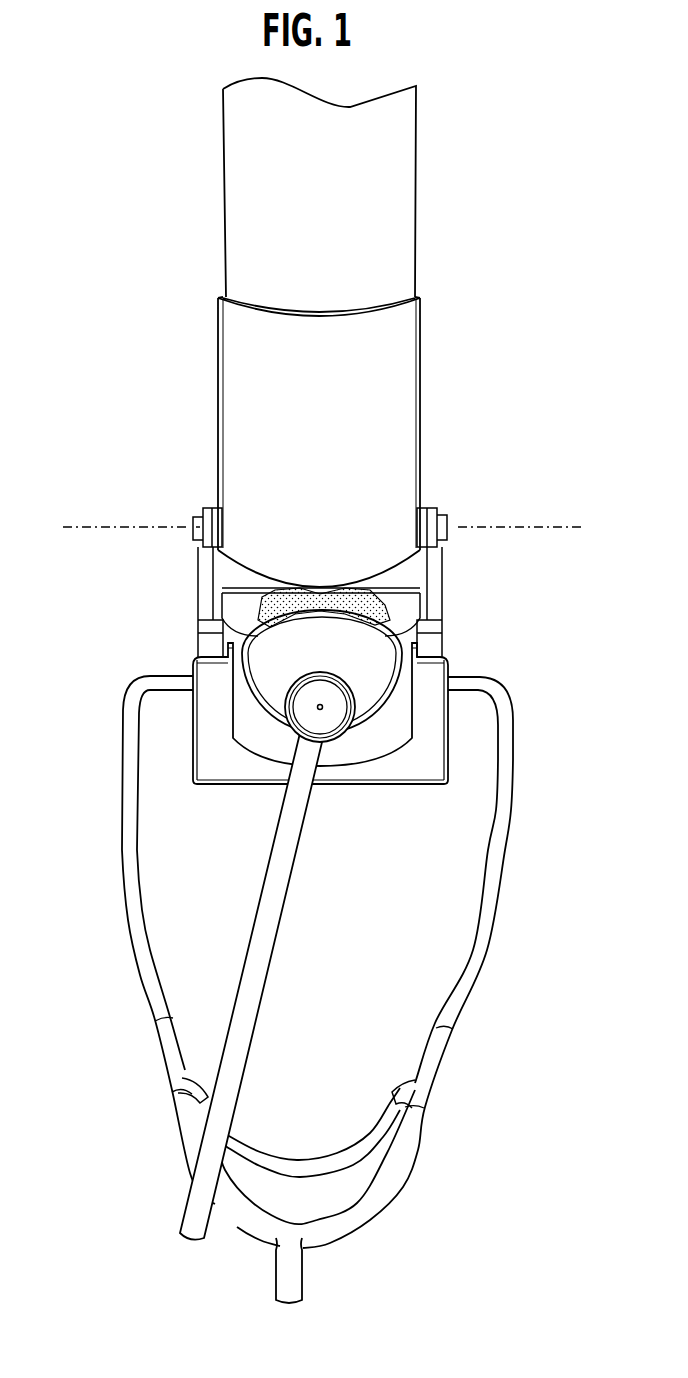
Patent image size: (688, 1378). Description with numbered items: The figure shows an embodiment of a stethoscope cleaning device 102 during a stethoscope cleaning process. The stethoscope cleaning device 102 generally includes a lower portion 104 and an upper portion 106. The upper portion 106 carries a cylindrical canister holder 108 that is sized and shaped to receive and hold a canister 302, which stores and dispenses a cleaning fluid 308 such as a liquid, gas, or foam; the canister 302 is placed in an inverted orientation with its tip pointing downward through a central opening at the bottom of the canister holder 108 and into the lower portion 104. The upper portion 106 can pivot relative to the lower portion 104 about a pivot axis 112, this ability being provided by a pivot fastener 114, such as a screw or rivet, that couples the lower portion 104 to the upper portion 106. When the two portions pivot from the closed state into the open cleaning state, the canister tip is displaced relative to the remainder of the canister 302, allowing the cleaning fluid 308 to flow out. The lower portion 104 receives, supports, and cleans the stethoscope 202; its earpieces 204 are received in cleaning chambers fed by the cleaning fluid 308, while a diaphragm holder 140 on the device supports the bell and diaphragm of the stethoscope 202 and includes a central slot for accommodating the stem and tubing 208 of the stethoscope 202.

The stethoscope cleaning device 102 is at (133, 446).
The lower portion 104 is at (210, 748).
The upper portion 106 is at (217, 380).
The cylindrical canister holder 108 is at (387, 367).
The pivot axis 112 is at (523, 524).
The pivot fastener 114 is at (201, 512).
The diaphragm holder 140 is at (390, 738).
The stethoscope 202 is at (248, 967).
The earpieces 204 is at (470, 682).
The tubing 208 is at (298, 1273).
The canister 302 is at (233, 203).
The cleaning fluid 308 is at (378, 598).